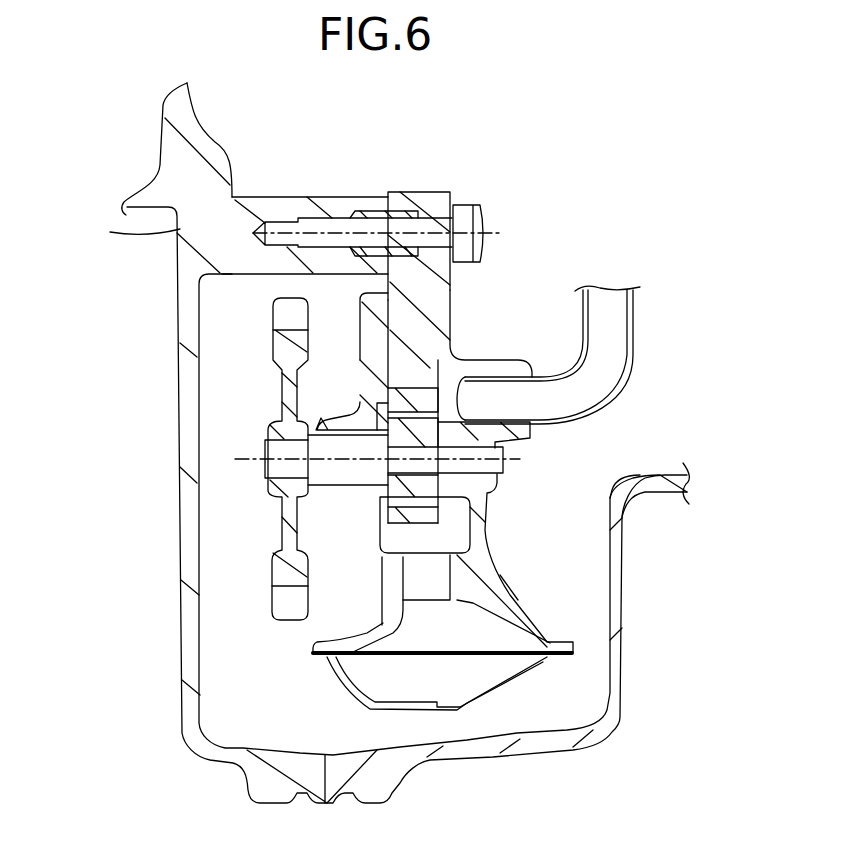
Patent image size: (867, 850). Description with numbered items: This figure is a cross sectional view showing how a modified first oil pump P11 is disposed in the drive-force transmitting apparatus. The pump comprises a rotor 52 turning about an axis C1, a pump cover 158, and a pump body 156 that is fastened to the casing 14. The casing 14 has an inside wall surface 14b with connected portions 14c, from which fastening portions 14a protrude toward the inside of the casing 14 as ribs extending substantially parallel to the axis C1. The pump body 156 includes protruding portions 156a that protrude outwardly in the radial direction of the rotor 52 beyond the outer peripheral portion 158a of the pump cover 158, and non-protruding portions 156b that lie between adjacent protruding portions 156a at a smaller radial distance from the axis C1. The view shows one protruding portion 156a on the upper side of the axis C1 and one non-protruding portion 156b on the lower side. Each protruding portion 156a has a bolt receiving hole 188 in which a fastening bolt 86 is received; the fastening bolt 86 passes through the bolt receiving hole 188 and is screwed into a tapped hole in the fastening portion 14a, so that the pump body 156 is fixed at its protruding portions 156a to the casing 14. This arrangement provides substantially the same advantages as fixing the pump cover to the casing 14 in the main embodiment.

The casing 14 is at (369, 451).
The fastening portions 14a is at (340, 213).
The inside wall surface 14b is at (203, 558).
The connected portions 14c is at (135, 228).
The fastening bolt 86 is at (475, 233).
The bolt receiving hole 188 is at (407, 236).
The pump body 156 is at (476, 437).
The protruding portions 156a is at (437, 202).
The non-protruding portions 156b is at (567, 648).
The pump cover 158 is at (349, 361).
The outer peripheral portion 158a is at (368, 306).
The rotor 52 is at (447, 516).
The axis C1 is at (252, 463).
The first oil pump P11 is at (574, 238).